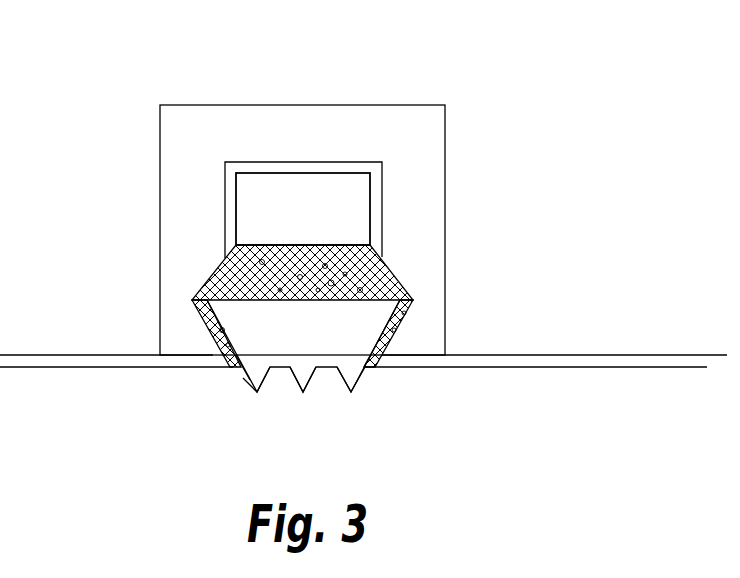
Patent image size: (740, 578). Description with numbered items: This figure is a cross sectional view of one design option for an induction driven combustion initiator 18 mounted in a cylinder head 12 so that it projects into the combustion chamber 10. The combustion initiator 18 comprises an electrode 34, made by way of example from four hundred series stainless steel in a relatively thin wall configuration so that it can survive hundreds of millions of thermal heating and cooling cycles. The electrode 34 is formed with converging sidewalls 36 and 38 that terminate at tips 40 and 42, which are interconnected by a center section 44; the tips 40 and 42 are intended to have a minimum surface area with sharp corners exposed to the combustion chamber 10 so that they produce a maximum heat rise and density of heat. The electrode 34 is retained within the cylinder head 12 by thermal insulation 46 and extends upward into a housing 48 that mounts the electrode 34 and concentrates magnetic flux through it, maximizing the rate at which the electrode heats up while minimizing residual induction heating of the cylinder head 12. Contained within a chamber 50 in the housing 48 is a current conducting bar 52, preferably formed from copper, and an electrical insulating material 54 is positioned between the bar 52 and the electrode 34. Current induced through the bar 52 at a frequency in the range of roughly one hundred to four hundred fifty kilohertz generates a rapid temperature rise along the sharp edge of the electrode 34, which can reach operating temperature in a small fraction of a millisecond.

The combustion chamber 10 is at (484, 482).
The cylinder head 12 is at (510, 367).
The combustion initiator 18 is at (545, 191).
The electrode 34 is at (370, 390).
The converging sidewall 36 is at (243, 378).
The converging sidewall 38 is at (363, 372).
The tip 40 is at (255, 393).
The tip 42 is at (351, 393).
The center section 44 is at (303, 378).
The thermal insulation 46 is at (398, 335).
The housing 48 is at (322, 105).
The chamber 50 is at (372, 200).
The current conducting bar 52 is at (297, 197).
The electrical insulating material 54 is at (395, 273).